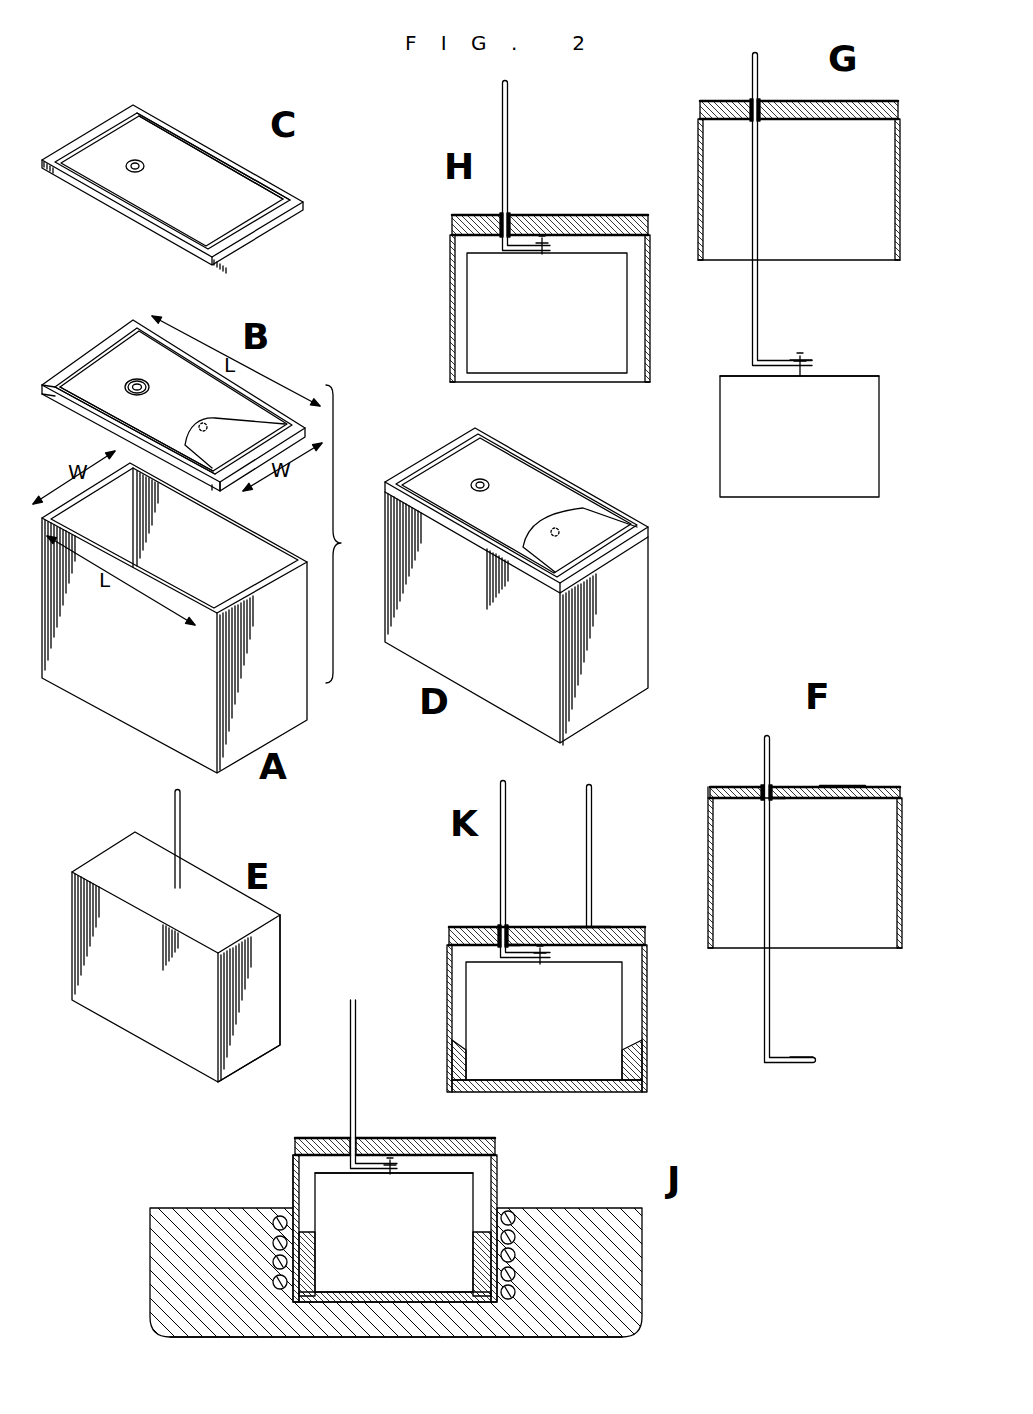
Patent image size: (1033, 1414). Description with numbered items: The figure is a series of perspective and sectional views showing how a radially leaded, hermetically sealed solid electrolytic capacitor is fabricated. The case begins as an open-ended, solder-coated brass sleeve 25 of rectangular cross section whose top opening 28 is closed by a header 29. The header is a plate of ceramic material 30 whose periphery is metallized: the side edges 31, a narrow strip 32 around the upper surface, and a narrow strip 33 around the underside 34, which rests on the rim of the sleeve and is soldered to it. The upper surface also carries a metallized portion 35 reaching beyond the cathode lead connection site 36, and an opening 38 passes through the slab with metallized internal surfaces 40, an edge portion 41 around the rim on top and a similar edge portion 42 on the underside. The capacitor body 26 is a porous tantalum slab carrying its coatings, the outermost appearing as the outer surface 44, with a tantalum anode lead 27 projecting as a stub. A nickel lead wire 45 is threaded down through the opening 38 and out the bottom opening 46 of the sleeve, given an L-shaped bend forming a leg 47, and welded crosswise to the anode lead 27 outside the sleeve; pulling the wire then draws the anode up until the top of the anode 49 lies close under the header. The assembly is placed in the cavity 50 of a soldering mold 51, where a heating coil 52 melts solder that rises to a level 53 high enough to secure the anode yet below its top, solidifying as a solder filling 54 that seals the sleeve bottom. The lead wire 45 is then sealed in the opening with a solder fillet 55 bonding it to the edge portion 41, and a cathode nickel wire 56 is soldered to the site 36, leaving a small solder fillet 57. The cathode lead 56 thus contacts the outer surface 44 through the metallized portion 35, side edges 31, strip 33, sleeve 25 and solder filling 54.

The sleeve 25 is at (292, 692).
The capacitor body 26 is at (475, 283).
The anode lead 27 is at (181, 840).
The top opening 28 is at (268, 555).
The header 29 is at (222, 488).
The plate of ceramic material 30 is at (167, 150).
The side edges 31 is at (83, 410).
The narrow strip 32 is at (46, 392).
The narrow strip 33 is at (218, 135).
The underside 34 is at (202, 206).
The metallized portion 35 is at (188, 432).
The cathode lead connection site 36 is at (203, 422).
The opening 38 is at (135, 382).
The internal surfaces 40 is at (496, 930).
The edge portion 41 is at (130, 385).
The edge portion 42 is at (127, 162).
The outer surface 44 is at (270, 942).
The nickel lead wire 45 is at (508, 155).
The bottom opening 46 is at (567, 383).
The leg 47 is at (789, 362).
The top of the anode 49 is at (866, 376).
The cavity 50 is at (293, 1208).
The soldering mold 51 is at (168, 1235).
The heating coil 52 is at (272, 1222).
The level 53 is at (304, 1243).
The solder filling 54 is at (455, 1078).
The solder fillet 55 is at (500, 925).
The nickel wire 56 is at (593, 848).
The solder fillet 57 is at (585, 925).